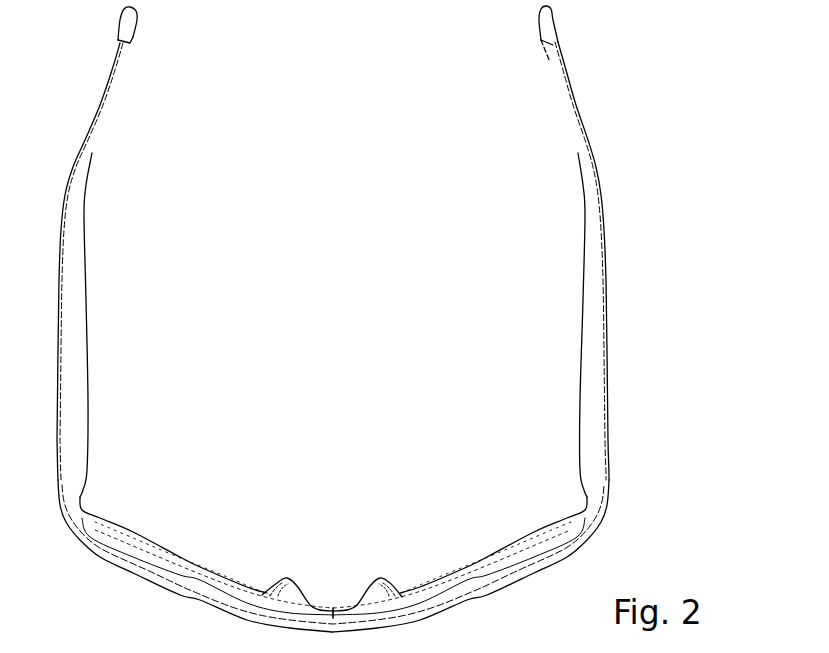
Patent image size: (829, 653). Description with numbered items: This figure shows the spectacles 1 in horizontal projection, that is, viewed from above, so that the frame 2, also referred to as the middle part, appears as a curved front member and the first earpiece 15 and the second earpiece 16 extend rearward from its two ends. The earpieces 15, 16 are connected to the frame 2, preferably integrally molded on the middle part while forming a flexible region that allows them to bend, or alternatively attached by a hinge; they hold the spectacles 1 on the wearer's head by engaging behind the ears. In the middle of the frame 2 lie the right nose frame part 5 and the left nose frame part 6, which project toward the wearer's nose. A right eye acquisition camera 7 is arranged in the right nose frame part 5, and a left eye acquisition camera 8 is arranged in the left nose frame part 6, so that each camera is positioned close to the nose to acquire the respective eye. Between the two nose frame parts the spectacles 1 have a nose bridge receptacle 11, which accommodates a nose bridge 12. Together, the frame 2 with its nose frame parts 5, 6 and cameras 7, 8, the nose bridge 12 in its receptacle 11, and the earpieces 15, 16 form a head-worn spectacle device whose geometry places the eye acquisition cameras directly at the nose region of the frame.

The spectacles 1 is at (600, 463).
The frame 2 is at (133, 560).
The right nose frame part 5 is at (262, 593).
The left nose frame part 6 is at (400, 594).
The right eye acquisition camera 7 is at (297, 612).
The left eye acquisition camera 8 is at (386, 590).
The nose bridge receptacle 11 is at (375, 593).
The nose bridge 12 is at (290, 592).
The first earpiece 15 is at (77, 263).
The second earpiece 16 is at (602, 307).